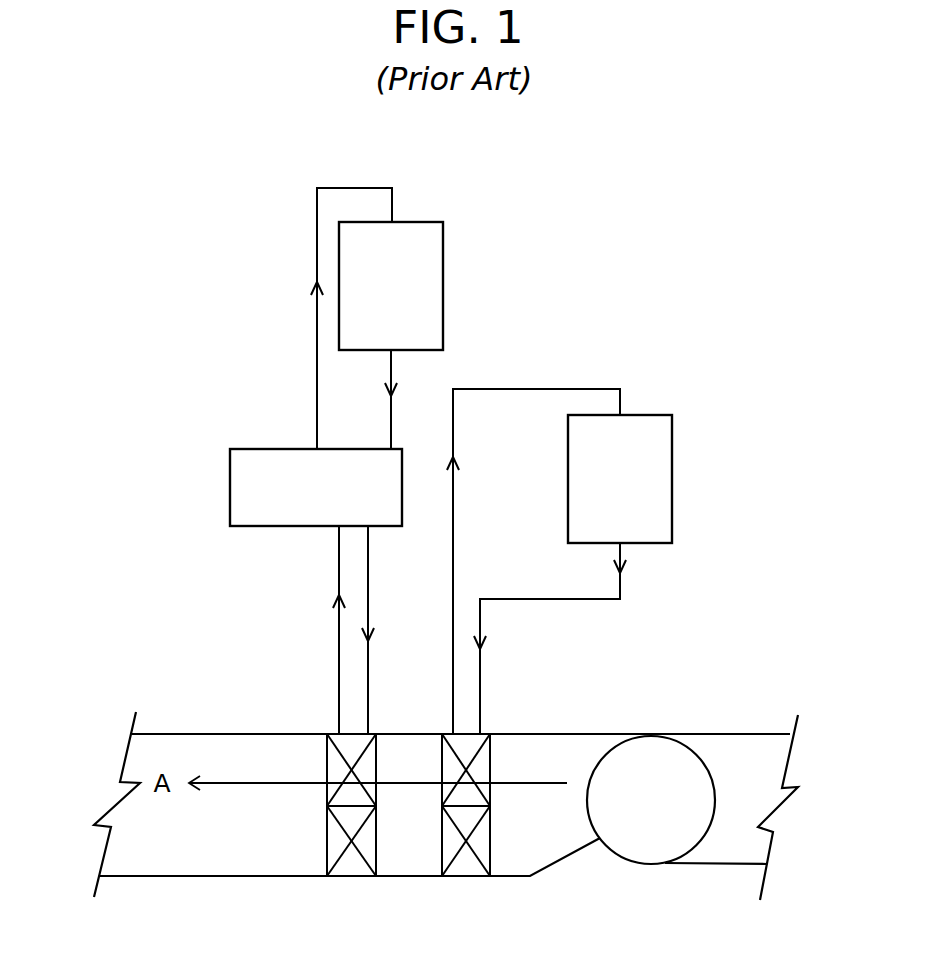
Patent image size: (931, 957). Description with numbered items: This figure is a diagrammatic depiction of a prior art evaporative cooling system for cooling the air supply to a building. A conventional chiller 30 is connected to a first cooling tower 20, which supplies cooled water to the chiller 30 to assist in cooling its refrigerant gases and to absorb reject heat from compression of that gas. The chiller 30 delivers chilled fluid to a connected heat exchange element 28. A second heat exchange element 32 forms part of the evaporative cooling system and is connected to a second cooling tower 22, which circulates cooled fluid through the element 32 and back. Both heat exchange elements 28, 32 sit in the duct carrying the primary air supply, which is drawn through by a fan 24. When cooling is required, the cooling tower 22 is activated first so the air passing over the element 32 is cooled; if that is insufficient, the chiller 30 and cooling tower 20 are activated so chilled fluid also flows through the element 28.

The cooling tower 20 is at (427, 247).
The cooling tower 22 is at (655, 443).
The fan 24 is at (677, 755).
The heat exchange element 28 is at (328, 765).
The conventional chiller 30 is at (240, 505).
The heat exchange element 32 is at (490, 765).